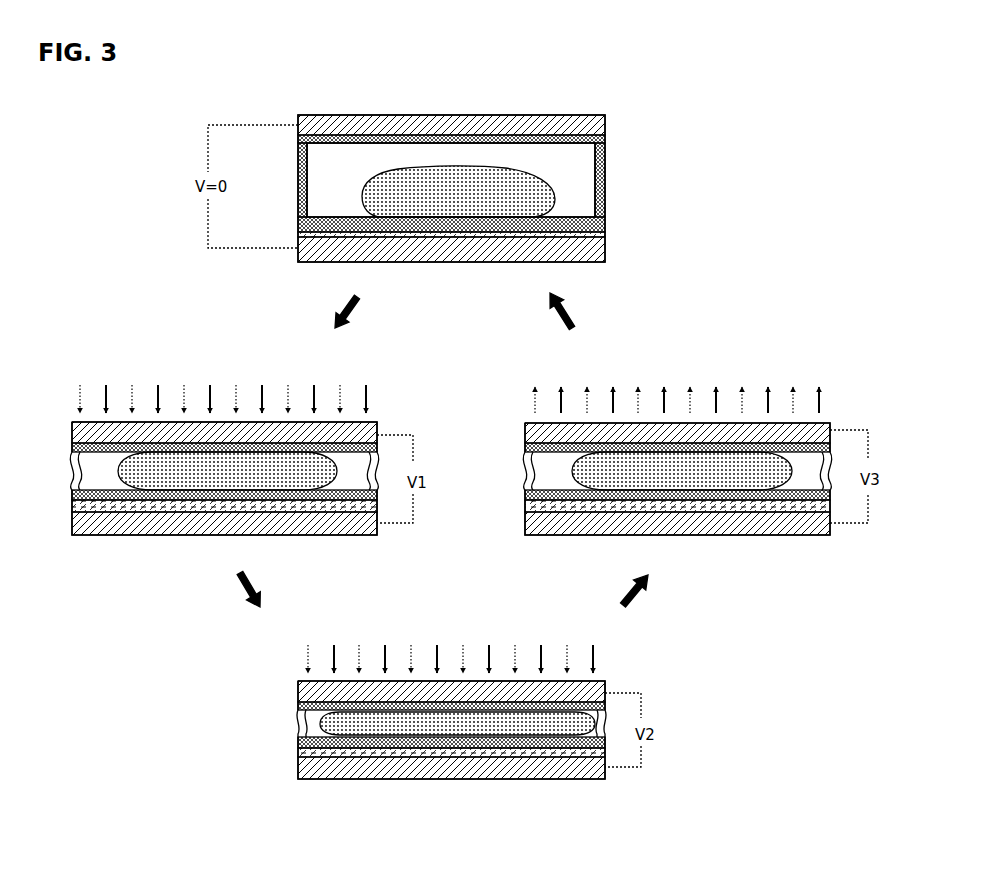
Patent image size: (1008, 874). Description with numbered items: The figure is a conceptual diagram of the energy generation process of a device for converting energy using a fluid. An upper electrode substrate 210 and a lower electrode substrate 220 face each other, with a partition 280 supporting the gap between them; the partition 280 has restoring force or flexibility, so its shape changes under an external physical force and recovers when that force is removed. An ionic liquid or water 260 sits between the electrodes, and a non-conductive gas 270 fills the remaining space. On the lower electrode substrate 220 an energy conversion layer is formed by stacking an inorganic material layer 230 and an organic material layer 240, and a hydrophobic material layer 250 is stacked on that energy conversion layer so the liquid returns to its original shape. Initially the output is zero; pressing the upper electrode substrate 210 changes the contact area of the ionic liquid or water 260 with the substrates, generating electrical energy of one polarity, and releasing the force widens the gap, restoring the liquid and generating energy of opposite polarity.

The upper electrode substrate 210 is at (606, 122).
The lower electrode substrate 220 is at (607, 252).
The inorganic material layer 230 is at (607, 237).
The organic material layer 240 is at (607, 230).
The hydrophobic material layer 250 is at (607, 143).
The ionic liquid or water 260 is at (400, 181).
The non-conductive gas 270 is at (343, 193).
The partition 280 is at (298, 205).